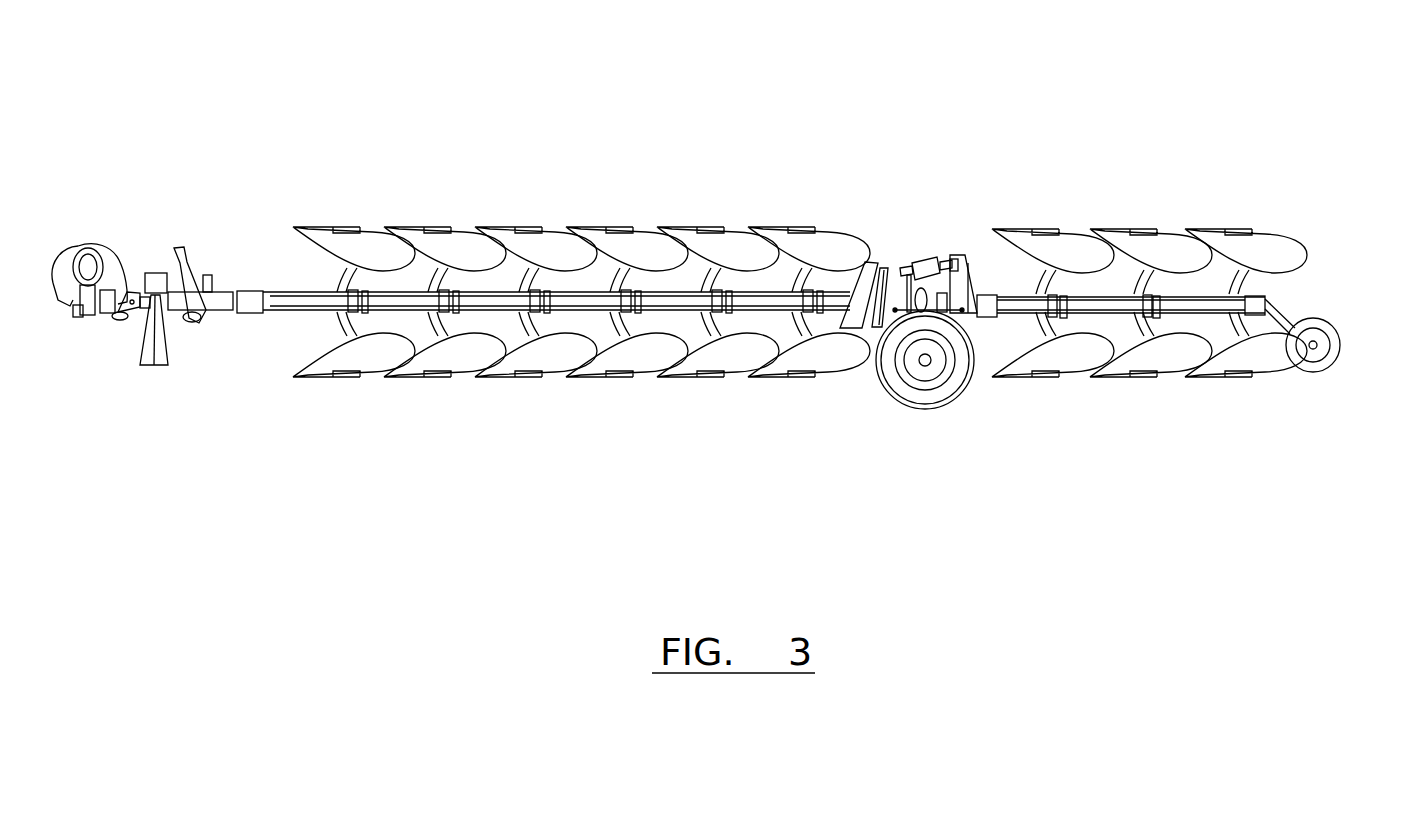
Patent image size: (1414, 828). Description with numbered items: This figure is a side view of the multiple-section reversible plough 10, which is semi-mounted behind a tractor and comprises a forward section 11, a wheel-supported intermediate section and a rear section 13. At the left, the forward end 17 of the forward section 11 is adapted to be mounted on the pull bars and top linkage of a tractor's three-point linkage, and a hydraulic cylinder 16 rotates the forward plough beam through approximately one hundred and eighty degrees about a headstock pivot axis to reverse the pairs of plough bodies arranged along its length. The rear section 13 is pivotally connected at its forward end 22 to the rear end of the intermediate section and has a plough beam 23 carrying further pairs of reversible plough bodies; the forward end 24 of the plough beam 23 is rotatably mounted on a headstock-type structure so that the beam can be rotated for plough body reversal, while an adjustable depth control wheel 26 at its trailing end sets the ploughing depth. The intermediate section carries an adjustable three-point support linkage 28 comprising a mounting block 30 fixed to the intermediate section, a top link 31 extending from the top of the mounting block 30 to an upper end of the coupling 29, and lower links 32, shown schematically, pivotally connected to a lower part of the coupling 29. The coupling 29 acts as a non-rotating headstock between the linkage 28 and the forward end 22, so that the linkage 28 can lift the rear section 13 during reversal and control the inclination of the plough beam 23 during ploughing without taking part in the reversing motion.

The multiple-section reversible plough 10 is at (702, 198).
The forward section 11 is at (527, 402).
The rear section 13 is at (1233, 208).
The hydraulic cylinder 16 is at (197, 283).
The forward end 17 is at (118, 240).
The forward end of rear section 22 is at (980, 345).
The plough beam 23 is at (1105, 307).
The forward end of plough beam 24 is at (988, 305).
The adjustable depth control wheel 26 is at (1334, 326).
The 3-point support linkage 28 is at (946, 215).
The coupling 29 is at (970, 278).
The mounting block 30 is at (897, 290).
The top link 31 is at (925, 265).
The lower links 32 is at (905, 320).